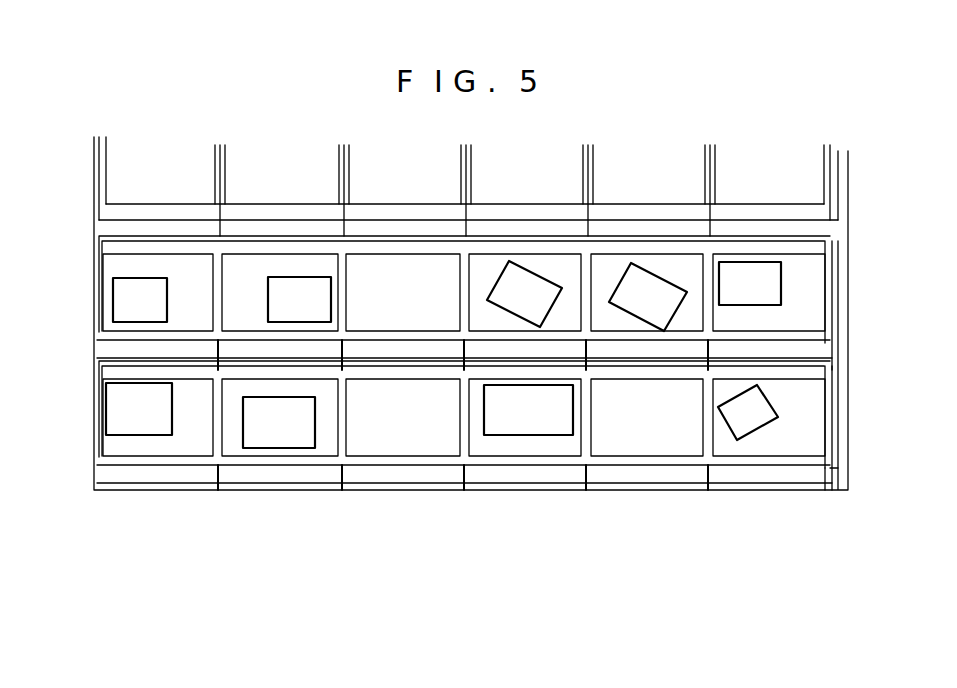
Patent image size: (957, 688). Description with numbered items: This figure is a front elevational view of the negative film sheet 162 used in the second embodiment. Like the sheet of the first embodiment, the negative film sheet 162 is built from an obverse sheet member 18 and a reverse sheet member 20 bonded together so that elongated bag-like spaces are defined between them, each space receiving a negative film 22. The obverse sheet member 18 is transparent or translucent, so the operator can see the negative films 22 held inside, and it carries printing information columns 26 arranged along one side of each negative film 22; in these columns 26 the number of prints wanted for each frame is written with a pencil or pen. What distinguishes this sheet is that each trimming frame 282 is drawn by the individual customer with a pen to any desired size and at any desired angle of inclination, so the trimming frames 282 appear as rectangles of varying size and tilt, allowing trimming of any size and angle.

The negative film sheet 162 is at (518, 497).
The reverse sheet member 20 is at (843, 482).
The negative film 22 is at (838, 265).
The printing information column 26 is at (828, 355).
The trimming frame 282 is at (781, 285).
The obverse sheet member 18 is at (826, 485).